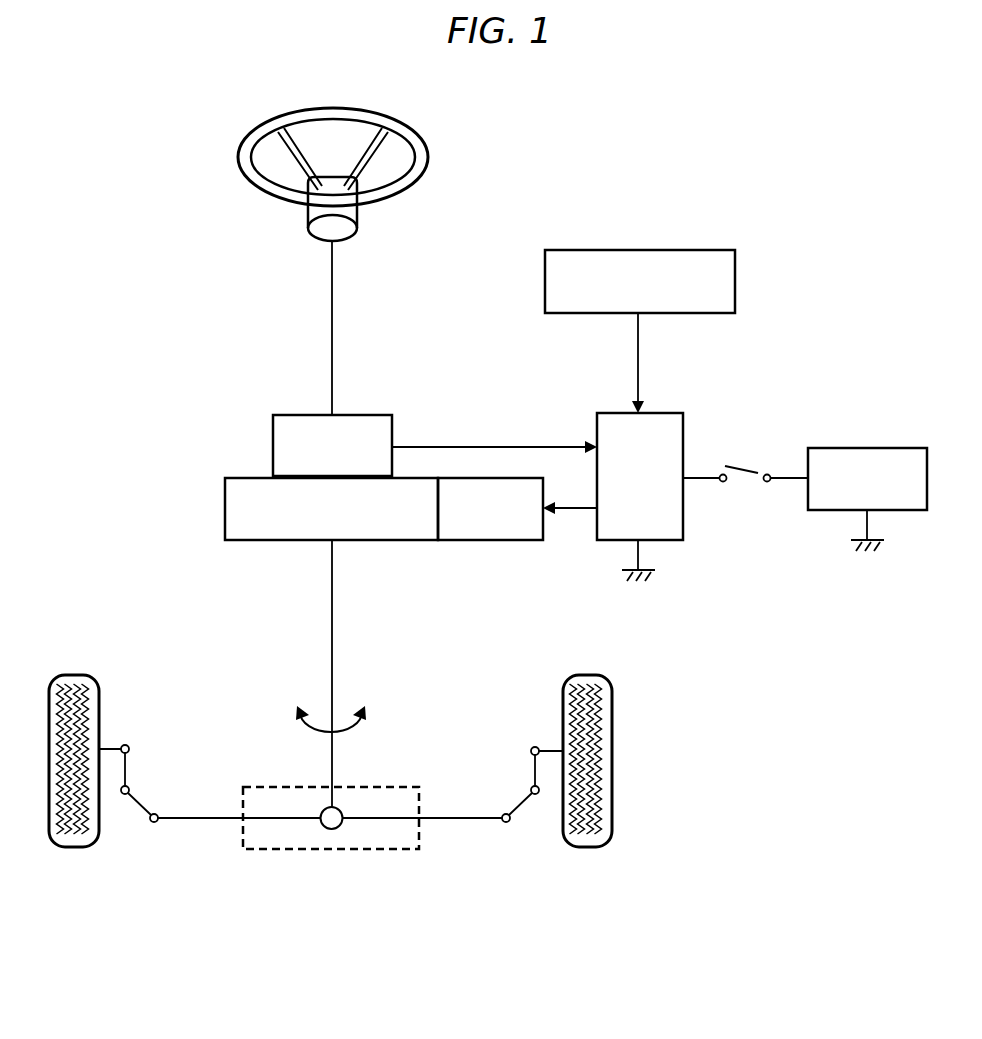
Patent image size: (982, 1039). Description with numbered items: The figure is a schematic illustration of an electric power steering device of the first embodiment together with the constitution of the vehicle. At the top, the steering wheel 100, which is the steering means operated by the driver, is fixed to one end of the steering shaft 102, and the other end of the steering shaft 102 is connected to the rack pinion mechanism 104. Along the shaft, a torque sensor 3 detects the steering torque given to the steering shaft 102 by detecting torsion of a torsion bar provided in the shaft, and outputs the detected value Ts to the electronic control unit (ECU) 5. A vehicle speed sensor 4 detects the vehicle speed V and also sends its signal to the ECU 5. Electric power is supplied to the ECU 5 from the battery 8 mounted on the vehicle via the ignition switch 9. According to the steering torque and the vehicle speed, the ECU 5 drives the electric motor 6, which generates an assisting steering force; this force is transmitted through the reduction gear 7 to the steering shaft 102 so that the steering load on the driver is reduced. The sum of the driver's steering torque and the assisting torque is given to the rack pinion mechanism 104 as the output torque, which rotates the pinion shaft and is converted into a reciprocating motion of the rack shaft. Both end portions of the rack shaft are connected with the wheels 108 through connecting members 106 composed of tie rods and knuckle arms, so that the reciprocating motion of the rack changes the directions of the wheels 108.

The steering wheel 100 is at (239, 156).
The steering shaft 102 is at (332, 327).
The torque sensor 3 is at (273, 445).
The vehicle speed sensor 4 is at (735, 276).
The electronic control unit (ECU) 5 is at (660, 413).
The electric motor 6 is at (488, 540).
The reduction gear 7 is at (225, 510).
The battery 8 is at (865, 448).
The ignition switch 9 is at (758, 457).
The rack pinion mechanism 104 is at (330, 851).
The connecting members 106 is at (158, 775).
The wheels 108 is at (68, 848).